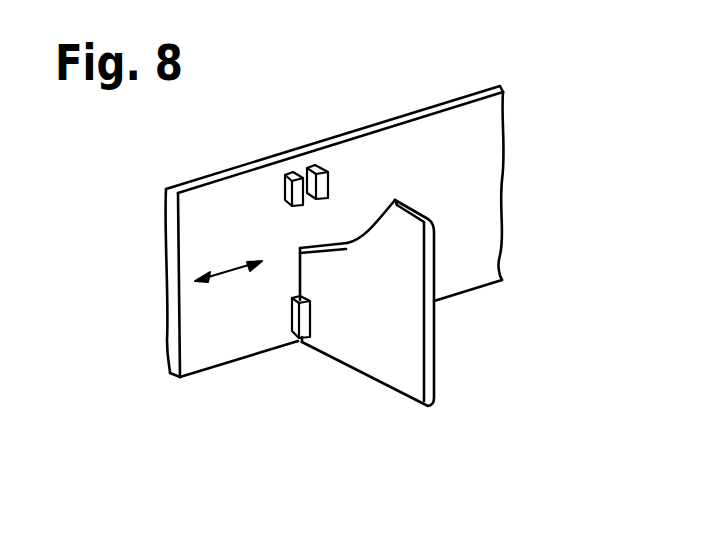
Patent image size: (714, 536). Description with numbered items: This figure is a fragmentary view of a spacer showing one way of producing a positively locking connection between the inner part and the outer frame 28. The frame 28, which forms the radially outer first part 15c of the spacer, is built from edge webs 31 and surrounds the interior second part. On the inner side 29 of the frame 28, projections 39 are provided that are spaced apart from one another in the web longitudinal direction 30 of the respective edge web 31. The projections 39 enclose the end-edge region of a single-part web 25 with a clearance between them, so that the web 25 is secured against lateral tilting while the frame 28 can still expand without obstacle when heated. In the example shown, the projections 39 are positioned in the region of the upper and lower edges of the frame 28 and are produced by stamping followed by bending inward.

The radially outer first part 15c is at (505, 237).
The web 25 is at (403, 347).
The frame 28 is at (462, 98).
The inner side of the frame 29 is at (349, 200).
The longitudinal direction 30 is at (232, 275).
The edge web 31 is at (180, 188).
The projections 39 is at (320, 177).